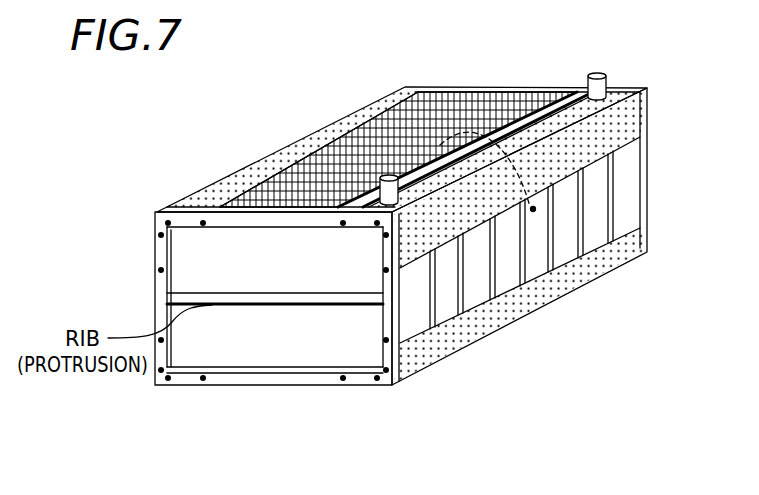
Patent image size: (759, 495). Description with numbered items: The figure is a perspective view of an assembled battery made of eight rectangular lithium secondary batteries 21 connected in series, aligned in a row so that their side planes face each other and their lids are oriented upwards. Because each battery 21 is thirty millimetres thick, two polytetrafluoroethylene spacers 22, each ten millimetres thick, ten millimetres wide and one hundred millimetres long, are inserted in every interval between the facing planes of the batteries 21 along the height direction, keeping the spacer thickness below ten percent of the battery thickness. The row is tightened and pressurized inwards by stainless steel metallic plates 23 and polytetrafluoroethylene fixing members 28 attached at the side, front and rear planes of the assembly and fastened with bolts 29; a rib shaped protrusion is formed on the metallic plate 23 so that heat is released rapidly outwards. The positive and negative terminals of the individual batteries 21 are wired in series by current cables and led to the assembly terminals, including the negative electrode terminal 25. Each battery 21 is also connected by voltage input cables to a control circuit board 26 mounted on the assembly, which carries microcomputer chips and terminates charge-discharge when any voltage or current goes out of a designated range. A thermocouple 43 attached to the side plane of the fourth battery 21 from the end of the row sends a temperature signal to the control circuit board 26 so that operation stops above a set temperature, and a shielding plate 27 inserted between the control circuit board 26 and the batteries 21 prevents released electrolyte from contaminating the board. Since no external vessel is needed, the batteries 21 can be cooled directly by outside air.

The rectangular lithium secondary battery 21 is at (531, 268).
The spacer 22 is at (505, 295).
The metallic plate 23 is at (277, 381).
The negative electrode terminal 25 is at (607, 74).
The control circuit board 26 is at (497, 88).
The shielding plate 27 is at (556, 90).
The fixing member 28 is at (250, 175).
The bolt 29 is at (160, 236).
The thermocouple 43 is at (533, 209).